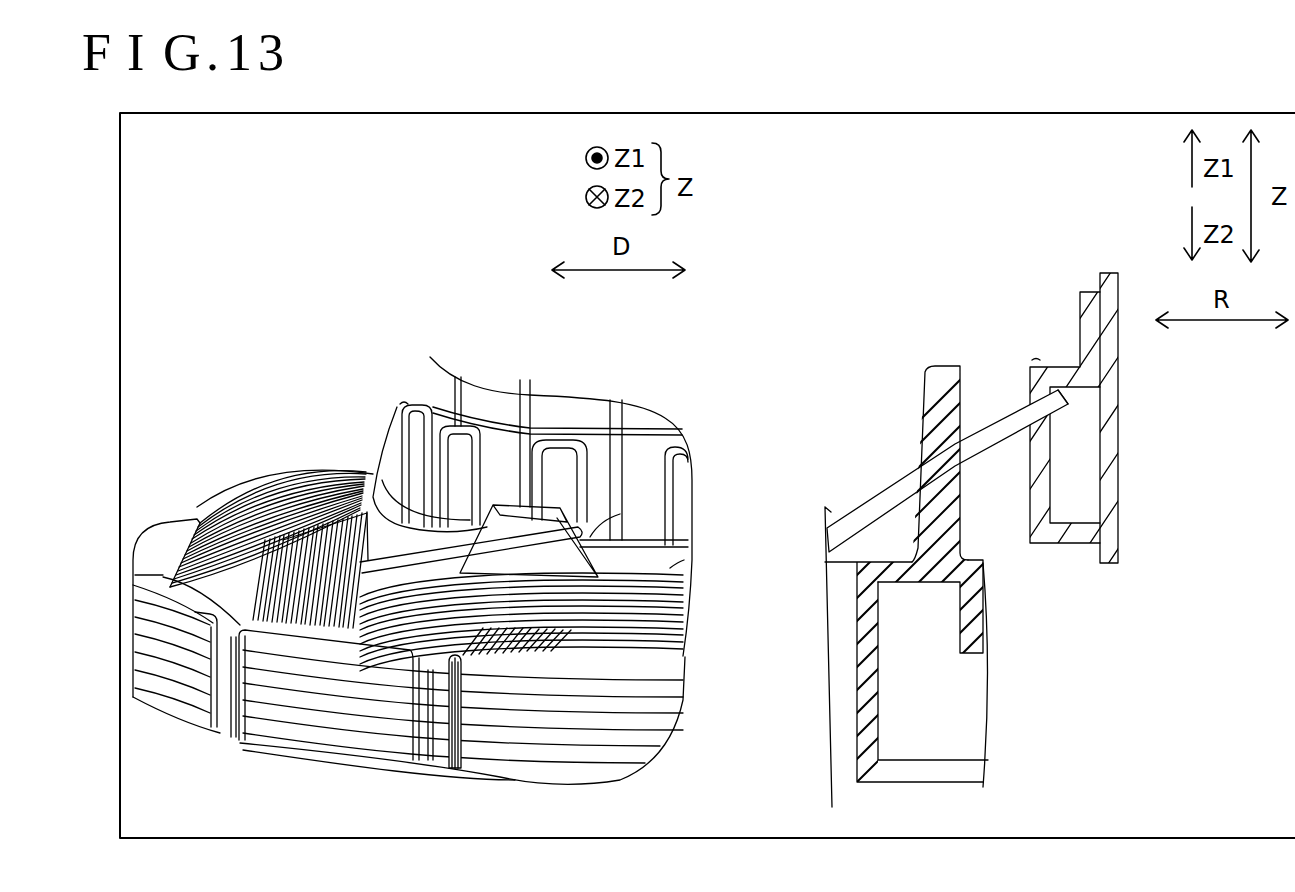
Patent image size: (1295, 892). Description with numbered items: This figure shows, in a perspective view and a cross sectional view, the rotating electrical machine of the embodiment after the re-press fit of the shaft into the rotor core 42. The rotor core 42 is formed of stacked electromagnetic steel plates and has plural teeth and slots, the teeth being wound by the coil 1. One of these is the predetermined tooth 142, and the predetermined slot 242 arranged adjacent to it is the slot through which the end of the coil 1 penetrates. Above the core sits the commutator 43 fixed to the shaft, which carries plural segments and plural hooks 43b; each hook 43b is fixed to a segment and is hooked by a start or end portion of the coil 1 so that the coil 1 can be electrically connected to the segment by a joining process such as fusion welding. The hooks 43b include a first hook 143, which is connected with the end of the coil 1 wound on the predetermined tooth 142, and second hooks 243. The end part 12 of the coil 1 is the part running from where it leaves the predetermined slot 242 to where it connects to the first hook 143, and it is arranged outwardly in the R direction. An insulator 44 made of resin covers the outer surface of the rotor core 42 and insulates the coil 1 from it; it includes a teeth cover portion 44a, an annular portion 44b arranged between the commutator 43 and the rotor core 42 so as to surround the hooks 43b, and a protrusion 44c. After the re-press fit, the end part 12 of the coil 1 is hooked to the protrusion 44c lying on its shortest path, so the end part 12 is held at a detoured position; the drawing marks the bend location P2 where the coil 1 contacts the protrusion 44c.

The coil 1 is at (288, 466).
The end part 12 is at (590, 513).
The rotor core 42 is at (352, 747).
The predetermined tooth 142 is at (313, 670).
The predetermined slot 242 is at (230, 717).
The commutator 43 is at (658, 404).
The hook 43b is at (482, 430).
The first hook 143 is at (571, 440).
The second hook 243 is at (422, 405).
The insulator 44 is at (244, 474).
The teeth cover portion 44a is at (178, 526).
The annular portion 44b is at (670, 568).
The protrusion 44c is at (600, 533).
The contact point P2 is at (393, 410).